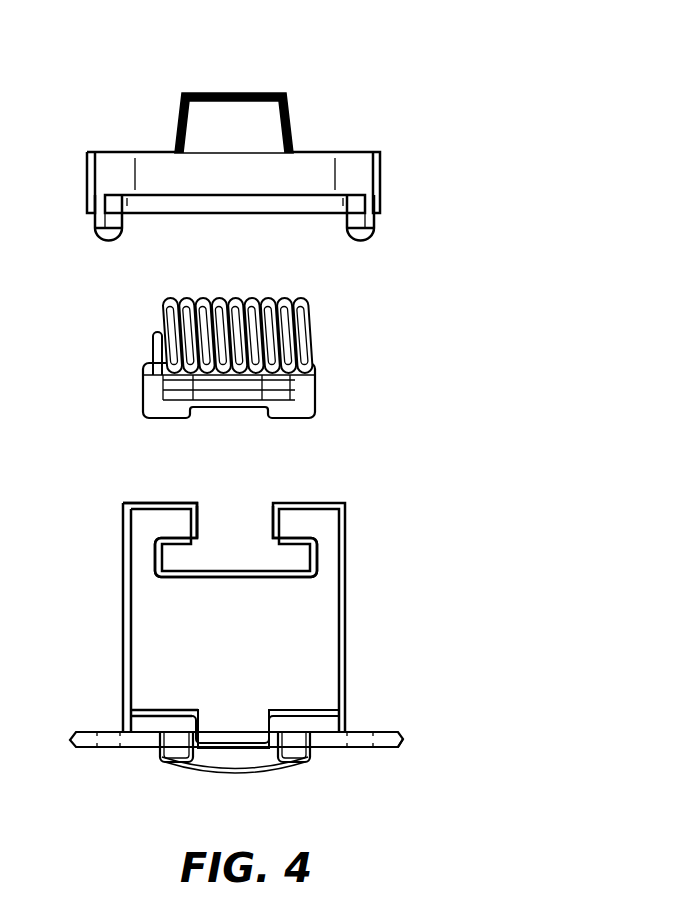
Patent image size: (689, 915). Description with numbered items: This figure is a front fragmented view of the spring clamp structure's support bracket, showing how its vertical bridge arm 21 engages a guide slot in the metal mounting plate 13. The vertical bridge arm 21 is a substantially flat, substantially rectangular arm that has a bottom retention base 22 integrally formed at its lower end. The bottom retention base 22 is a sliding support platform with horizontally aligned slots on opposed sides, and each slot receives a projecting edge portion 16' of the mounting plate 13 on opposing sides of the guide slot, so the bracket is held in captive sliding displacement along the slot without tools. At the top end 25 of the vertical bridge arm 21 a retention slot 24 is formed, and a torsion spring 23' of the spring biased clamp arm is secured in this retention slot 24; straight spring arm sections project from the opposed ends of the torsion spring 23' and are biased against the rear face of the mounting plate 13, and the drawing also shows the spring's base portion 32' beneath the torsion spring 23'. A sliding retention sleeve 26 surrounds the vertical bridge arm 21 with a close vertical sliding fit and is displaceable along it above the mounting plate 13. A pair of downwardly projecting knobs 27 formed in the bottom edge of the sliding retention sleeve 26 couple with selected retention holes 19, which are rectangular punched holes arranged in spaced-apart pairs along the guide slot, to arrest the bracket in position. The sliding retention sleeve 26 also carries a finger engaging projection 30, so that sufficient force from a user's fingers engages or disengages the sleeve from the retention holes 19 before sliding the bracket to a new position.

The mounting plate 13 is at (382, 732).
The projecting edge portion 16' is at (241, 782).
The retention holes 19 is at (363, 747).
The vertical bridge arm 21 is at (288, 637).
The bottom retention base 22 is at (168, 710).
The torsion spring 23' is at (281, 326).
The retention slot 24 is at (223, 545).
The top end 25 is at (175, 502).
The sliding retention sleeve 26 is at (242, 150).
The projecting knobs 27 is at (372, 236).
The finger engaging projection 30 is at (252, 92).
The coil base 32' is at (288, 384).